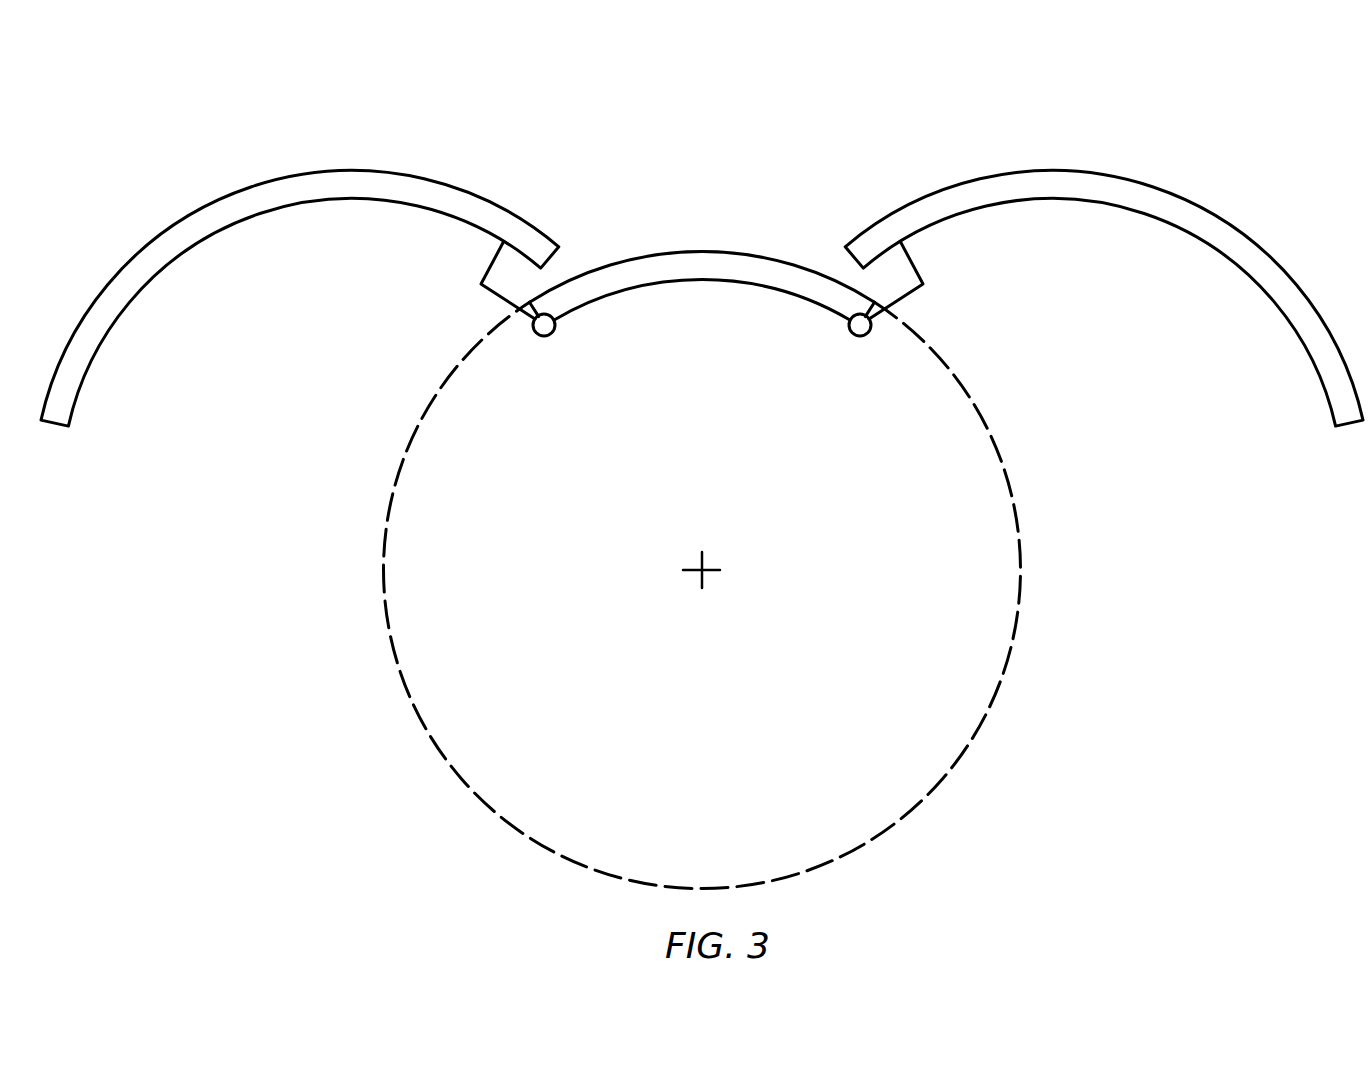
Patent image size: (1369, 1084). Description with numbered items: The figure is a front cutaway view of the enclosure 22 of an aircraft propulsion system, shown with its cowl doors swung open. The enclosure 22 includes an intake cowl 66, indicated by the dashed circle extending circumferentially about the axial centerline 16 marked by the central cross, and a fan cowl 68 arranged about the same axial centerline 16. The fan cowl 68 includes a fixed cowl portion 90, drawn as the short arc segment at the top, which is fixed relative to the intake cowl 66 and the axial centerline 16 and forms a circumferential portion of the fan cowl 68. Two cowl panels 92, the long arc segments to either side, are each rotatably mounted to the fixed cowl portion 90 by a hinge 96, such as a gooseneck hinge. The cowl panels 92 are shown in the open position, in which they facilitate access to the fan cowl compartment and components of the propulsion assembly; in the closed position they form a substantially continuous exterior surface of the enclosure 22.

The enclosure 22 is at (1118, 110).
The cowl panel 92 is at (368, 178).
The fixed cowl portion 90 is at (757, 267).
The hinge 96 is at (496, 294).
The fan cowl 68 is at (620, 181).
The intake cowl 66 is at (1000, 681).
The axial centerline 16 is at (703, 572).